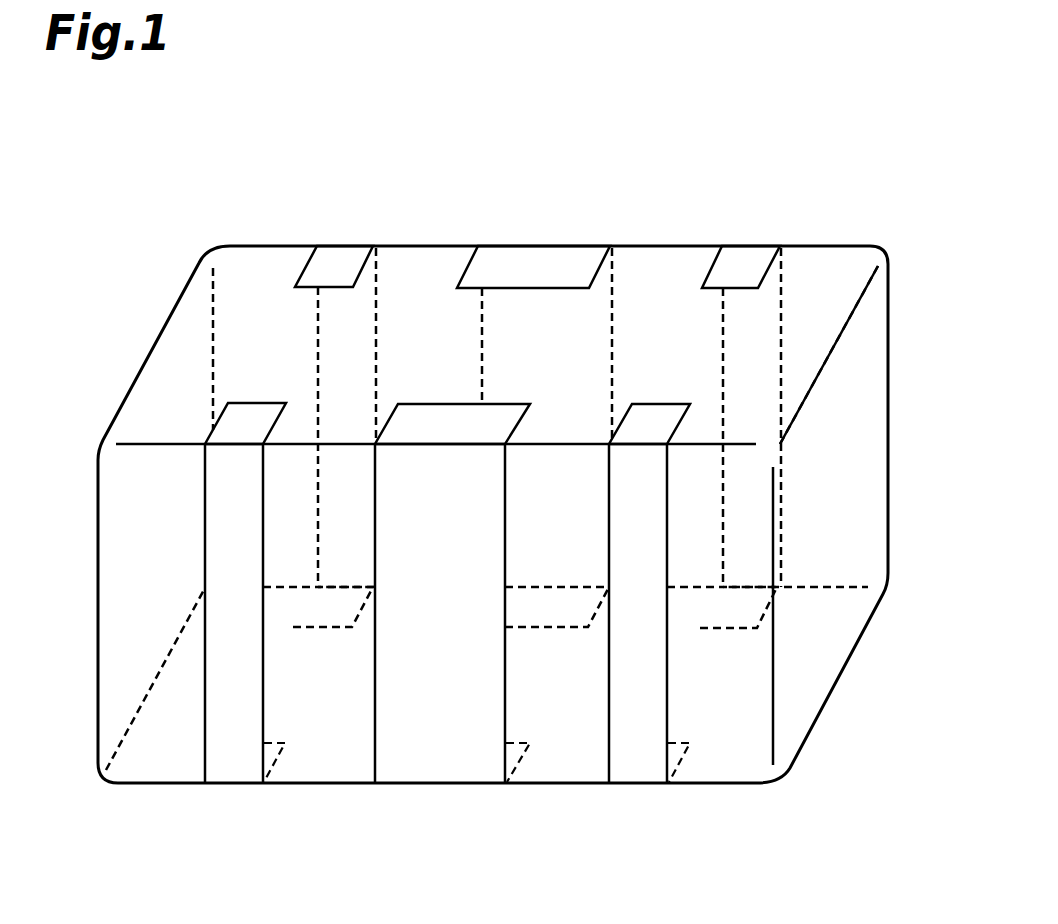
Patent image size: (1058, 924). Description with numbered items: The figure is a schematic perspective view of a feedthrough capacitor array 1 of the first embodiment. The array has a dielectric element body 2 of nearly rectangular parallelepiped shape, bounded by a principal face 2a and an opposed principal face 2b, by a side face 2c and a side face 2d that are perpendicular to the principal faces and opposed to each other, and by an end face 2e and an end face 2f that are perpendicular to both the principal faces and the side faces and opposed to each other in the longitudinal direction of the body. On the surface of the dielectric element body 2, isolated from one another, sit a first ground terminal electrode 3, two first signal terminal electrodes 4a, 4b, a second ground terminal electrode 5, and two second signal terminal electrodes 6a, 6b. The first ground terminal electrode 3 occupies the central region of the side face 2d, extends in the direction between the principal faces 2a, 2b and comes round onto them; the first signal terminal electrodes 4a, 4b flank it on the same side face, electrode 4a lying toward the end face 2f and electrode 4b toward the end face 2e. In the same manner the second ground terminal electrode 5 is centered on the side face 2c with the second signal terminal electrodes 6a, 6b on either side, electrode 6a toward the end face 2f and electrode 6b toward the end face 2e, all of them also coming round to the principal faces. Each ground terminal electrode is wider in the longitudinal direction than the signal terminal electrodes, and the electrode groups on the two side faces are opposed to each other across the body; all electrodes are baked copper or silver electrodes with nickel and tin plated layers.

The feedthrough capacitor array 1 is at (752, 108).
The dielectric element body 2 is at (865, 248).
The principal face 2a is at (419, 300).
The principal face 2b is at (583, 740).
The side face 2c is at (328, 695).
The side face 2d is at (672, 302).
The end face 2e is at (850, 475).
The end face 2f is at (137, 515).
The first ground terminal electrode 3 is at (534, 260).
The first signal terminal electrode 4a is at (342, 258).
The first signal terminal electrode 4b is at (742, 260).
The second ground terminal electrode 5 is at (448, 765).
The second signal terminal electrode 6a is at (235, 764).
The second signal terminal electrode 6b is at (637, 767).